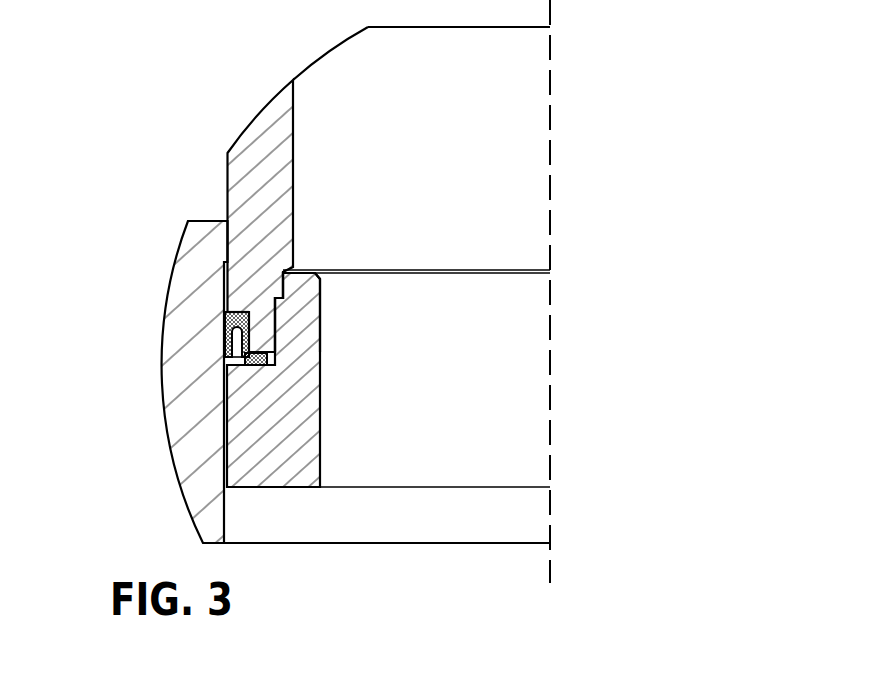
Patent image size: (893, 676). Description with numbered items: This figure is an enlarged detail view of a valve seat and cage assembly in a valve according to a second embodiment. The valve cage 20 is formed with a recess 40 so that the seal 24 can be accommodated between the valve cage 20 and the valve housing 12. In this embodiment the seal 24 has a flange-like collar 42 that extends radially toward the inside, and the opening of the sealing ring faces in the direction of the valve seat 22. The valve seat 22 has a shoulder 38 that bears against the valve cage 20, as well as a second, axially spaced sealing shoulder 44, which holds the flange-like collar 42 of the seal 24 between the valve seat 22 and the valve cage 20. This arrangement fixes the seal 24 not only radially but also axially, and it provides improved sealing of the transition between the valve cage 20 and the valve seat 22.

The valve housing 12 is at (195, 257).
The valve cage 20 is at (272, 135).
The valve seat 22 is at (255, 440).
The seal 24 is at (228, 315).
The shoulder 38 is at (276, 352).
The recess 40 is at (243, 310).
The flange-like collar 42 is at (268, 360).
The sealing shoulder 44 is at (250, 365).